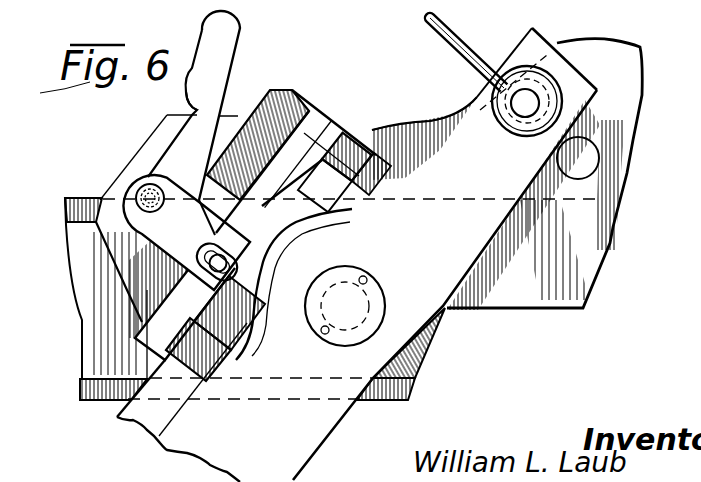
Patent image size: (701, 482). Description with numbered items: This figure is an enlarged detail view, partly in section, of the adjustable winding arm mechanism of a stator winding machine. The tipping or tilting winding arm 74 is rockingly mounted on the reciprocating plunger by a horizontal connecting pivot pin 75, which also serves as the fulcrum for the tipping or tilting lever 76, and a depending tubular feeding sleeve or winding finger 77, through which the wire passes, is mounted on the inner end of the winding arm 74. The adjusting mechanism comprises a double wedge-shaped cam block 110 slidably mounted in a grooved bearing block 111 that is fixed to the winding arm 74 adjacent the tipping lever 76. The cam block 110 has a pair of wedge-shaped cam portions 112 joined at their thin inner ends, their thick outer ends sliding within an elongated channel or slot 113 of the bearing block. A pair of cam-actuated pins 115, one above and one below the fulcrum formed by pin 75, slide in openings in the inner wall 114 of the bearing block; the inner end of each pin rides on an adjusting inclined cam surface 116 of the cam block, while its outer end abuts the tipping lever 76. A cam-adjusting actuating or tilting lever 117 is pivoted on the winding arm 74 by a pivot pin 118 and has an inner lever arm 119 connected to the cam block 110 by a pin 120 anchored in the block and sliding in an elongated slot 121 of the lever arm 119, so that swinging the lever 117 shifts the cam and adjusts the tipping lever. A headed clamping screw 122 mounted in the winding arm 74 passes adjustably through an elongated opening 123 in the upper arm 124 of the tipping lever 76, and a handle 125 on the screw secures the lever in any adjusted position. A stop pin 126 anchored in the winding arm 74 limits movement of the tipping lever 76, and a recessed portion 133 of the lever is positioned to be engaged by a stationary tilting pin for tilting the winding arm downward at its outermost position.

The winding arm 74 is at (528, 303).
The connecting pivot pin 75 is at (358, 315).
The tipping or tilting lever 76 is at (313, 441).
The tubular feeding sleeve or winding finger 77 is at (168, 118).
The double wedge-shaped cam block 110 is at (277, 232).
The grooved bearing block 111 is at (297, 88).
The wedge-shaped cam portions 112 is at (338, 85).
The elongated channel or slot 113 is at (340, 122).
The inner wall 114 is at (243, 308).
The cam-actuated pins 115 is at (378, 190).
The adjusting inclined cam surface 116 is at (325, 210).
The cam-adjusting winding-arm actuating or tilting lever 117 is at (215, 26).
The pivot pin 118 is at (140, 202).
The inner lever arm 119 is at (160, 225).
The pin 120 is at (227, 265).
The elongated slot 121 is at (200, 248).
The headed clamping screw 122 is at (510, 70).
The elongated opening 123 is at (545, 84).
The upper arm 124 is at (476, 96).
The handle 125 is at (426, 27).
The stop pin 126 is at (592, 160).
The recessed portion 133 is at (193, 100).